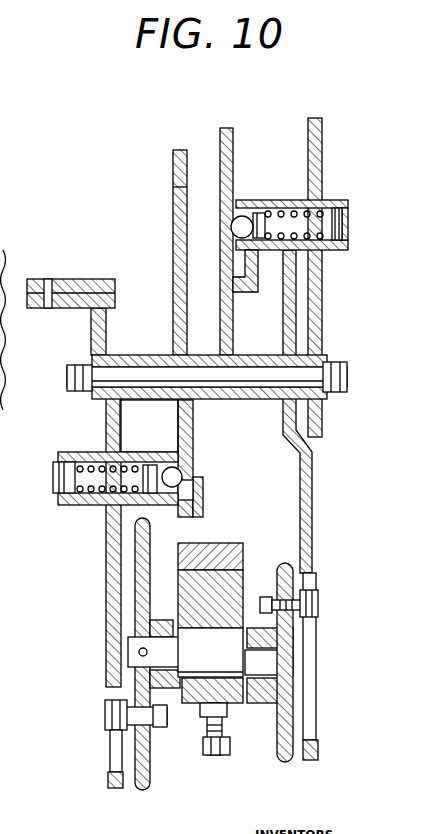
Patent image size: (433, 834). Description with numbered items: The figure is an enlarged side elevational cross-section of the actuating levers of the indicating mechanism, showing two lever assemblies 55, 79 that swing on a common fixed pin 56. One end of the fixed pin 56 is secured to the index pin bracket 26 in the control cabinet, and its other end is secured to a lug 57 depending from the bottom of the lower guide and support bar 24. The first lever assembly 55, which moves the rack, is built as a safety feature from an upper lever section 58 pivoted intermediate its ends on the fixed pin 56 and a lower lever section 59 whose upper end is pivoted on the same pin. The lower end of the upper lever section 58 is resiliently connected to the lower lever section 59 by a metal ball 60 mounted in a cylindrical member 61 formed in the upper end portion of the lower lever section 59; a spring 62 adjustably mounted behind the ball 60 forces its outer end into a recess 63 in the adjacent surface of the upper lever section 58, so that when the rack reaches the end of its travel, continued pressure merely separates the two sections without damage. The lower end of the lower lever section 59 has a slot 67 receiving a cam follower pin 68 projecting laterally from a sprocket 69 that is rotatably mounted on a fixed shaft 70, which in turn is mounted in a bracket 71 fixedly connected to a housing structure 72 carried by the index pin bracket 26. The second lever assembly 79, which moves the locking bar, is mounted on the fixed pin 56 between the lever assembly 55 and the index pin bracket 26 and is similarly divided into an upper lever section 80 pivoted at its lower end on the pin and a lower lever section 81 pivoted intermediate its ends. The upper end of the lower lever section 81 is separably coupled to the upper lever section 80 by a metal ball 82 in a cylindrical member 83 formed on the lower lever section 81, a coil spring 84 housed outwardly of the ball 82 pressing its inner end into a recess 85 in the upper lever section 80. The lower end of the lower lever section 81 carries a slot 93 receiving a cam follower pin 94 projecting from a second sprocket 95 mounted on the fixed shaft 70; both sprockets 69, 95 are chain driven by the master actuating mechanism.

The lower guide and support bar 24 is at (80, 279).
The index pin bracket 26 is at (320, 332).
The lever assembly 55 is at (207, 436).
The fixed pin 56 is at (138, 370).
The lug 57 is at (91, 339).
The upper lever section 58 is at (173, 221).
The lower lever section 59 is at (106, 420).
The metal ball 60 is at (181, 473).
The cylindrical member 61 is at (146, 452).
The spring 62 is at (95, 498).
The recess 63 is at (185, 481).
The slot 67 is at (115, 748).
The cam follower pin 68 is at (105, 712).
The sprocket 69 is at (149, 556).
The fixed shaft 70 is at (139, 652).
The bracket 71 is at (188, 704).
The housing structure 72 is at (221, 552).
The lever assembly 79 is at (322, 491).
The upper lever section 80 is at (235, 176).
The lower lever section 81 is at (312, 545).
The metal ball 82 is at (236, 222).
The cylindrical member 83 is at (267, 207).
The coil spring 84 is at (324, 203).
The recess 85 is at (233, 246).
The slot 93 is at (313, 578).
The cam follower pin 94 is at (314, 618).
The sprocket 95 is at (280, 722).